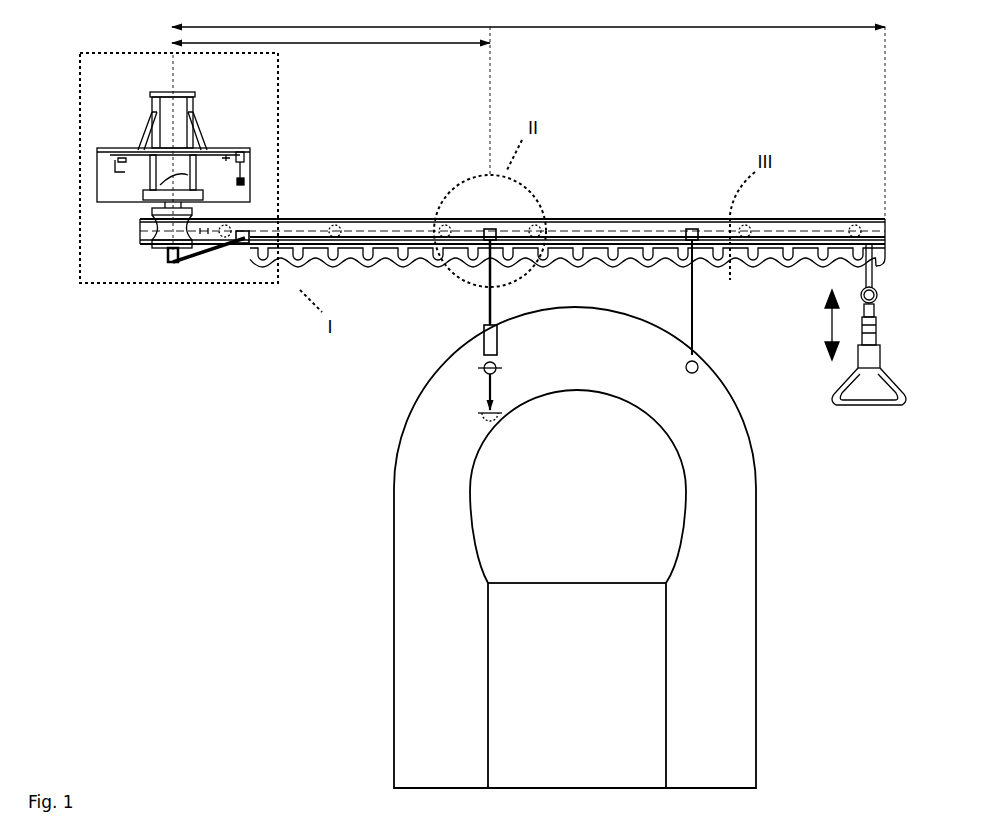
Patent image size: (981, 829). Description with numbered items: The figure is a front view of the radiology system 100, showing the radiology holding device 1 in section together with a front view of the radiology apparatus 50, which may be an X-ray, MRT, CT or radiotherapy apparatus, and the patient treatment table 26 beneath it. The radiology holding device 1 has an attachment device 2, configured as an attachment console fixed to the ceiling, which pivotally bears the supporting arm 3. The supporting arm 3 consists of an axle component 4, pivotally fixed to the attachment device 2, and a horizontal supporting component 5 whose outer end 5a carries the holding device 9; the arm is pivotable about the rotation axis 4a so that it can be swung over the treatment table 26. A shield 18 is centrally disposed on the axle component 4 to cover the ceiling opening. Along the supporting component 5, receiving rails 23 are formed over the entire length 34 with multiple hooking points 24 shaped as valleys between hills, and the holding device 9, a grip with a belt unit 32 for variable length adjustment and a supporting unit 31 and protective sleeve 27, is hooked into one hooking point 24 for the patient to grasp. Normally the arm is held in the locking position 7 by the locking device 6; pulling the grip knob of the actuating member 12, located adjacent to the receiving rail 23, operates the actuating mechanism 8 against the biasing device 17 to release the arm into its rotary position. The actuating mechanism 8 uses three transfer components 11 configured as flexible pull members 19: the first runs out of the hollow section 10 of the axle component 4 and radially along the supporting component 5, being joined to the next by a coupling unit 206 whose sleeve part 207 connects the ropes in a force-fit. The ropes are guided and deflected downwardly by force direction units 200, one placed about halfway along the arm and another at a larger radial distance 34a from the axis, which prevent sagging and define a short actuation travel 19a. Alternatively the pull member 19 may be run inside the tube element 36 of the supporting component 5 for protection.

The radiology holding device 1 is at (792, 88).
The attachment device 2 is at (211, 138).
The supporting arm 3 is at (125, 368).
The axle component 4 is at (111, 261).
The rotation axis 4a is at (170, 70).
The supporting component 5 is at (529, 236).
The rail end 5a is at (860, 222).
The locking device 6 is at (233, 148).
The locking position 7 is at (250, 118).
The actuating mechanism 8 is at (107, 255).
The holding device 9 is at (873, 395).
The hollow section of the axle component 10 is at (165, 250).
The transfer component 11 is at (322, 238).
The actuating member 12 is at (696, 360).
The biasing device 17 is at (253, 173).
The shield 18 is at (127, 200).
The flexible pull member 19 is at (529, 330).
The actuation travel 19a is at (490, 388).
The receiving rail 23 is at (700, 260).
The hooking point 24 is at (815, 265).
The treatment table for patient 26 is at (565, 757).
The protective sleeve 27 is at (487, 347).
The supporting unit 31 is at (870, 405).
The belt unit 32 is at (876, 330).
The length of the supporting arm 34 is at (585, 30).
The radial distance 34a is at (420, 45).
The tube element 36 is at (760, 219).
The radiology apparatus 50 is at (415, 643).
The radiology system 100 is at (800, 130).
The force direction unit 200 is at (245, 245).
The coupling unit 206 is at (225, 257).
The sleeve part 207 is at (215, 240).